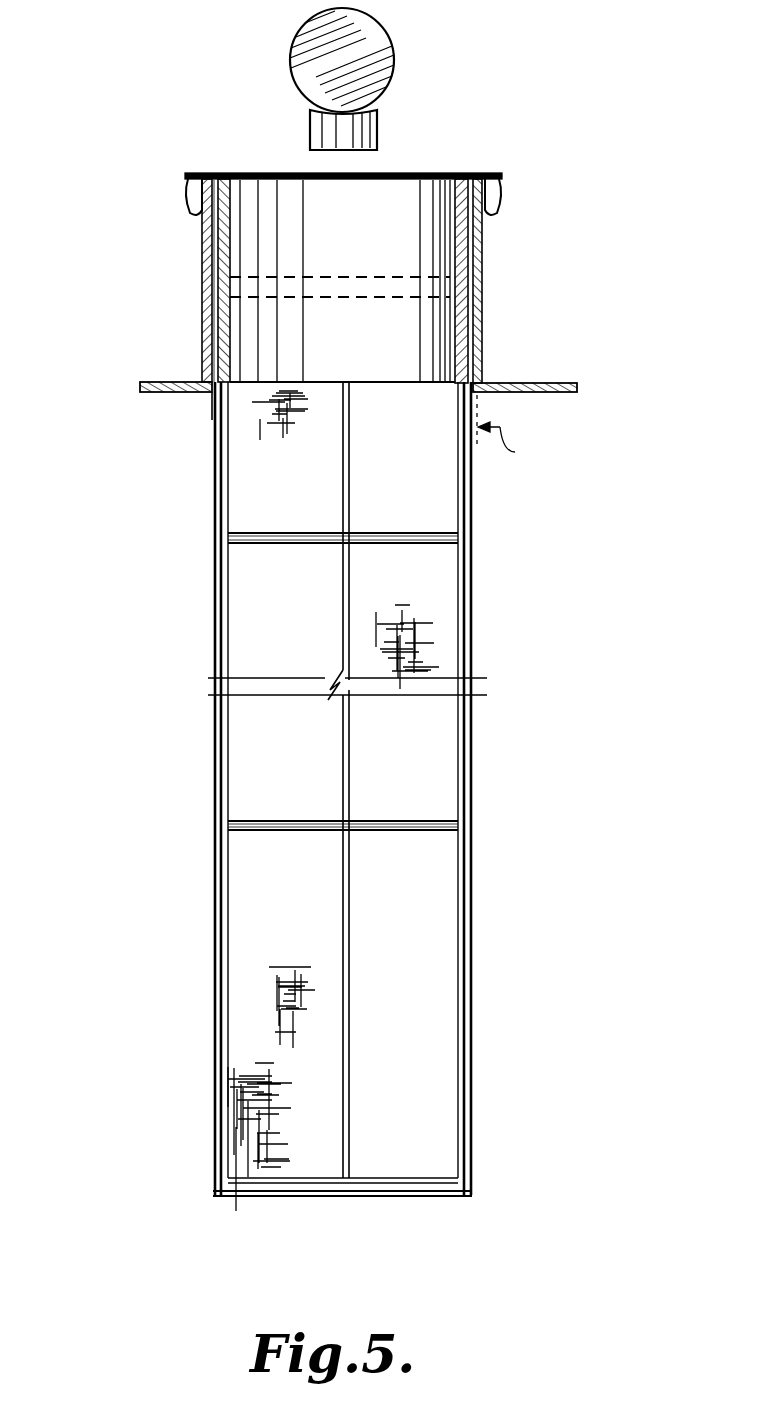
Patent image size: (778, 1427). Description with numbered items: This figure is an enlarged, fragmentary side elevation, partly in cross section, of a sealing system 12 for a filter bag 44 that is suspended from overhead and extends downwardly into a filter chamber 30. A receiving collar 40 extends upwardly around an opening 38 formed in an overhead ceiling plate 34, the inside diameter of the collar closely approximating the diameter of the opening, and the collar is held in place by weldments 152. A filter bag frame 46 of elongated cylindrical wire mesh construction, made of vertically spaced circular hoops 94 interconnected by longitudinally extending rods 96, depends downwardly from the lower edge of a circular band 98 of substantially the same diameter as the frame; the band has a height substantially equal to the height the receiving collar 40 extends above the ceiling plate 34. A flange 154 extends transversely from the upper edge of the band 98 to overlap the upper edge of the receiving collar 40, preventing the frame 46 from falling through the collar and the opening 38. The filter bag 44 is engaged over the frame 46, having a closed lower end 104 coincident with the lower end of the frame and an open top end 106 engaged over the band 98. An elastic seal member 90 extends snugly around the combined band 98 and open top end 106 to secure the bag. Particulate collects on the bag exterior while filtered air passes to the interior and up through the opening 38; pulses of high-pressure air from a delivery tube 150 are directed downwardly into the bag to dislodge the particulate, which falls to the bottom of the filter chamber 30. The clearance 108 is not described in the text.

The delivery tube 150 is at (397, 62).
The flange 154 is at (200, 175).
The circular band 98 is at (236, 212).
The open top end 106 is at (200, 240).
The receiving collar 40 is at (200, 268).
The elastic seal member 90 is at (200, 300).
The ceiling plate 34 is at (150, 382).
The opening 38 is at (210, 398).
The sealing system 12 is at (506, 288).
The weldments 152 is at (490, 378).
The clearance gap 108 is at (534, 434).
The filter bag 44 is at (472, 599).
The filter chamber 30 is at (118, 803).
The rods 96 is at (345, 778).
The circular hoops 94 is at (410, 830).
The filter bag frame 46 is at (442, 1044).
The closed lower end 104 is at (283, 1197).